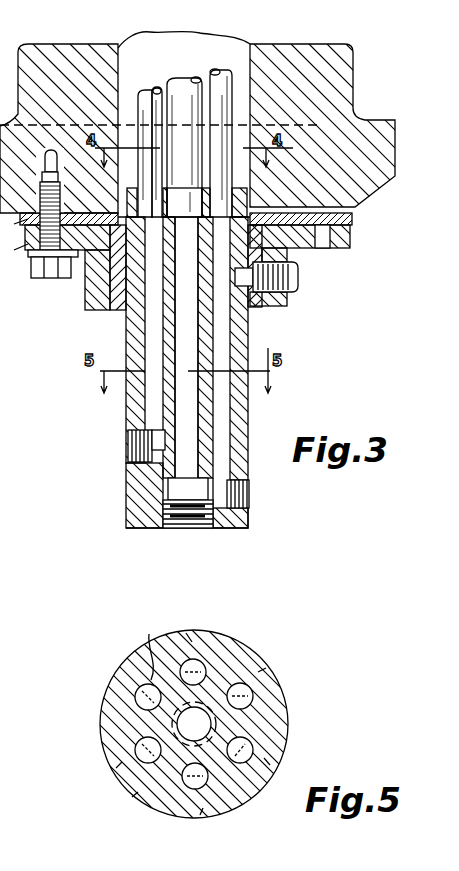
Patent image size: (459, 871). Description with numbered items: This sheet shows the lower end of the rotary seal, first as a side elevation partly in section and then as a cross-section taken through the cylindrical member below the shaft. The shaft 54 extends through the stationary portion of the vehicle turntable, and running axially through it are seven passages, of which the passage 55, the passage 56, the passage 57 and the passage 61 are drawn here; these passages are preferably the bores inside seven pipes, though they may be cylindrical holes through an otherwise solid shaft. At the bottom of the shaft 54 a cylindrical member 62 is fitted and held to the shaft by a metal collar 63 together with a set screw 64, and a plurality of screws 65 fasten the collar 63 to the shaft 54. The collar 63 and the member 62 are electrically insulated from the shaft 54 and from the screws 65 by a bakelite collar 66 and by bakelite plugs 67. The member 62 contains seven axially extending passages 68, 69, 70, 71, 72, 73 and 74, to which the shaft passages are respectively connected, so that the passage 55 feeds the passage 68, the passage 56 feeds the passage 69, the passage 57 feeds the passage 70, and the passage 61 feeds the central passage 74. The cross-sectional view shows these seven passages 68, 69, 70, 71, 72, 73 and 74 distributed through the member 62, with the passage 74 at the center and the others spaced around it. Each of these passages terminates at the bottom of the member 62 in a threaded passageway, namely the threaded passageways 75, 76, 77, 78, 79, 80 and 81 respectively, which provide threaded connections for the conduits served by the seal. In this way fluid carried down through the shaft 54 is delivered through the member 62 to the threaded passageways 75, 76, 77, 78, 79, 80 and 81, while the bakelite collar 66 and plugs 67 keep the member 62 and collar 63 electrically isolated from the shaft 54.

In FIG. 3, the shaft 54 is at (302, 54).
In FIG. 3, the passage 55 is at (218, 70).
In FIG. 3, the passage 56 is at (14, 226).
In FIG. 3, the passage 57 is at (150, 88).
In FIG. 3, the passage 61 is at (192, 78).
In FIG. 3, the cylindrical member 62 is at (136, 512).
In FIG. 5, the cylindrical member 62 is at (280, 733).
In FIG. 3, the metal collar 63 is at (350, 249).
In FIG. 3, the set screw 64 is at (298, 285).
In FIG. 3, the screw 65 is at (55, 279).
In FIG. 3, the bakelite collar 66 is at (352, 219).
In FIG. 3, the bakelite plug 67 is at (14, 254).
In FIG. 3, the axially extending passage 68 is at (241, 418).
In FIG. 5, the axially extending passage 68 is at (250, 697).
In FIG. 5, the axially extending passage 69 is at (207, 670).
In FIG. 3, the axially extending passage 70 is at (153, 401).
In FIG. 5, the axially extending passage 70 is at (137, 653).
In FIG. 5, the axially extending passage 71 is at (130, 746).
In FIG. 5, the axially extending passage 72 is at (172, 796).
In FIG. 5, the axially extending passage 73 is at (240, 788).
In FIG. 3, the axially extending passage 74 is at (189, 446).
In FIG. 5, the axially extending passage 74 is at (178, 723).
In FIG. 3, the threaded passageway 75 is at (248, 501).
In FIG. 5, the threaded passageway 75 is at (268, 669).
In FIG. 5, the threaded passageway 76 is at (185, 625).
In FIG. 3, the threaded passageway 77 is at (136, 451).
In FIG. 5, the threaded passageway 77 is at (118, 692).
In FIG. 5, the threaded passageway 78 is at (116, 768).
In FIG. 5, the threaded passageway 79 is at (200, 815).
In FIG. 5, the threaded passageway 80 is at (270, 765).
In FIG. 3, the threaded passageway 81 is at (193, 521).
In FIG. 5, the threaded passageway 81 is at (132, 797).